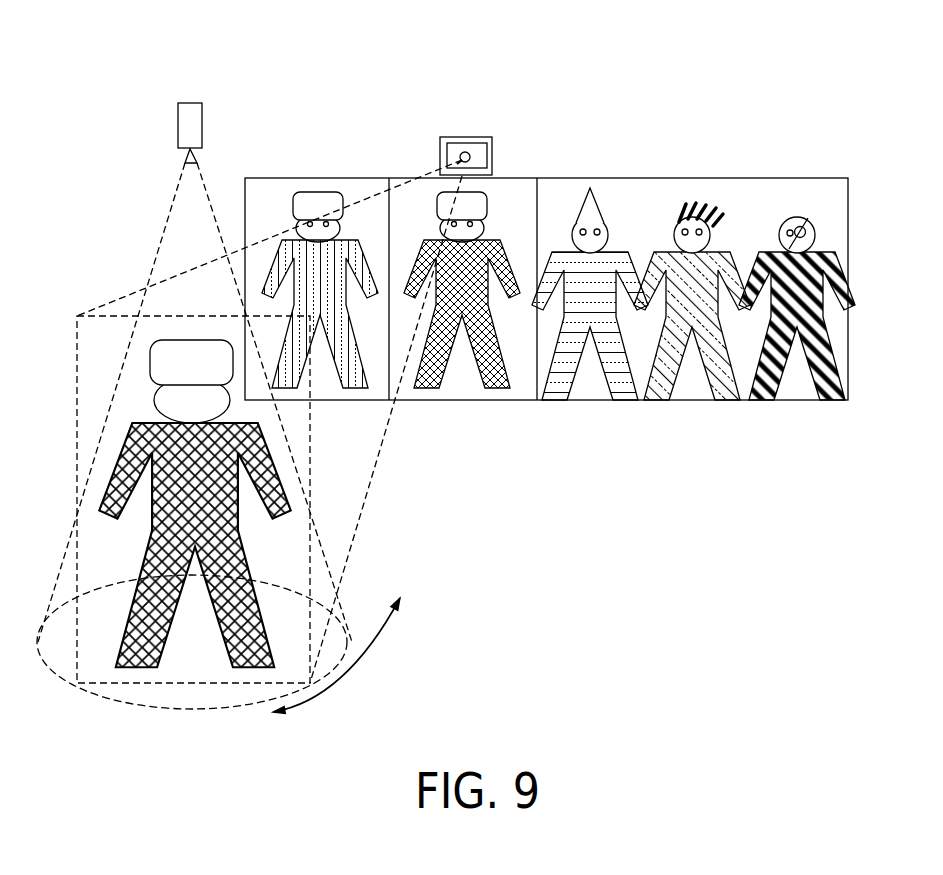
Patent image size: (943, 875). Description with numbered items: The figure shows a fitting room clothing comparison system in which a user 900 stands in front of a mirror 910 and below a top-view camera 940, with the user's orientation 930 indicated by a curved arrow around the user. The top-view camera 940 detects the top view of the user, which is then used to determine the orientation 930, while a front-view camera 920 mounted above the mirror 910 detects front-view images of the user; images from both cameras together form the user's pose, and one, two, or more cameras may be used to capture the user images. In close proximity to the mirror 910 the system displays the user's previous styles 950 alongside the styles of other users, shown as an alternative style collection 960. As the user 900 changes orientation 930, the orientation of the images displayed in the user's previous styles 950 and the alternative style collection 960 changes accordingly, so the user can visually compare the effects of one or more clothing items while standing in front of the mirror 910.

The user 900 is at (190, 340).
The mirror 910 is at (490, 402).
The front-view camera 920 is at (463, 137).
The orientation 930 is at (352, 662).
The top-view camera 940 is at (178, 128).
The user's previous styles 950 is at (285, 187).
The alternative style collection 960 is at (715, 187).